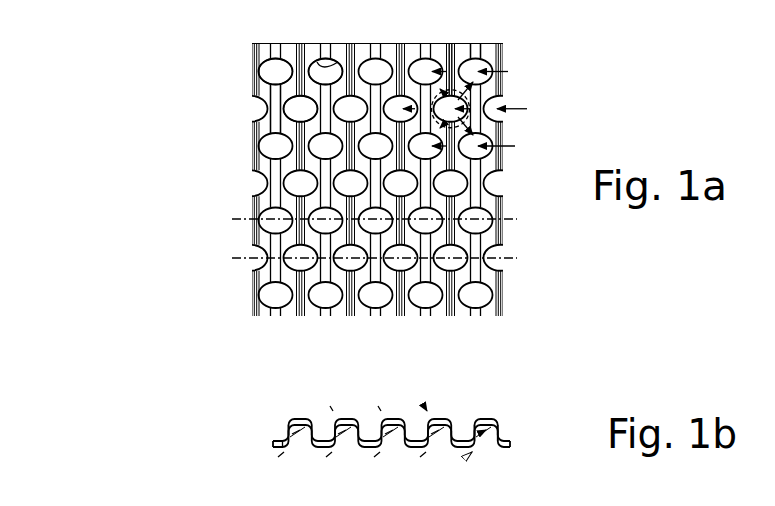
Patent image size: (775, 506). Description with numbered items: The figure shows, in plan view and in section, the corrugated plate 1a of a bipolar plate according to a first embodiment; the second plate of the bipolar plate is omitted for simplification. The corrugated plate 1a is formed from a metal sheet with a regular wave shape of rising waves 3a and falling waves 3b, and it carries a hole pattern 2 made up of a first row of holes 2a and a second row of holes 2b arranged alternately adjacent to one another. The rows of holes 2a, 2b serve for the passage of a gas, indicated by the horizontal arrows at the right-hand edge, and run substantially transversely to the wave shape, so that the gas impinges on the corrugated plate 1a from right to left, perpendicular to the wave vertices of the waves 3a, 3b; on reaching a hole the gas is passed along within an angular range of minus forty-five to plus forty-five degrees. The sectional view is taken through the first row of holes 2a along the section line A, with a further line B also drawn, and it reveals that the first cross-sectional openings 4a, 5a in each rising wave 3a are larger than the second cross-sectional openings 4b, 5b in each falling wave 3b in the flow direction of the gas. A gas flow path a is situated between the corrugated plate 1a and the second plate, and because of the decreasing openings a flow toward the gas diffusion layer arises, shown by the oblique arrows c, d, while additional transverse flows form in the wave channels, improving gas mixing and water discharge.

In FIG. 1A, the corrugated plate 1a is at (188, 283).
In FIG. 1A, the hole pattern 2 is at (282, 72).
In FIG. 1A, the first row of holes 2a is at (523, 68).
In FIG. 1B, the first row of holes 2a is at (523, 430).
In FIG. 1A, the second row of holes 2b is at (536, 106).
In FIG. 1A, the rising wave 3a is at (488, 44).
In FIG. 1B, the rising wave 3a is at (510, 422).
In FIG. 1A, the falling wave 3b is at (447, 44).
In FIG. 1B, the falling wave 3b is at (469, 422).
In FIG. 1A, the first cross-sectional opening 4a is at (340, 64).
In FIG. 1B, the first cross-sectional opening 4a is at (514, 406).
In FIG. 1A, the second cross-sectional opening 4b is at (320, 64).
In FIG. 1B, the second cross-sectional opening 4b is at (481, 410).
In FIG. 1A, the first cross-sectional opening 5a is at (313, 101).
In FIG. 1A, the second cross-sectional opening 5b is at (312, 112).
In FIG. 1A, the section line A is at (503, 219).
In FIG. 1A, the section line B is at (503, 258).
In FIG. 1B, the flow path a is at (312, 420).
In FIG. 1B, the oblique arrow c is at (290, 446).
In FIG. 1B, the oblique arrow d is at (284, 406).